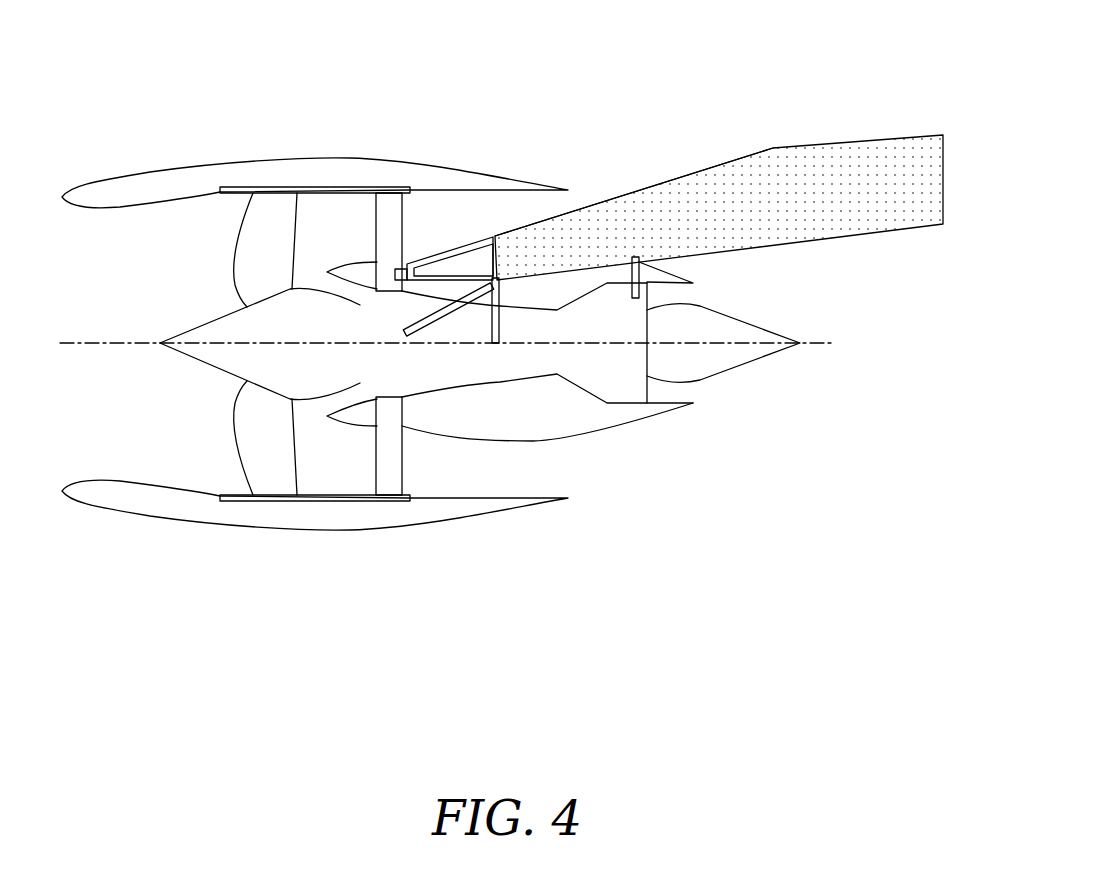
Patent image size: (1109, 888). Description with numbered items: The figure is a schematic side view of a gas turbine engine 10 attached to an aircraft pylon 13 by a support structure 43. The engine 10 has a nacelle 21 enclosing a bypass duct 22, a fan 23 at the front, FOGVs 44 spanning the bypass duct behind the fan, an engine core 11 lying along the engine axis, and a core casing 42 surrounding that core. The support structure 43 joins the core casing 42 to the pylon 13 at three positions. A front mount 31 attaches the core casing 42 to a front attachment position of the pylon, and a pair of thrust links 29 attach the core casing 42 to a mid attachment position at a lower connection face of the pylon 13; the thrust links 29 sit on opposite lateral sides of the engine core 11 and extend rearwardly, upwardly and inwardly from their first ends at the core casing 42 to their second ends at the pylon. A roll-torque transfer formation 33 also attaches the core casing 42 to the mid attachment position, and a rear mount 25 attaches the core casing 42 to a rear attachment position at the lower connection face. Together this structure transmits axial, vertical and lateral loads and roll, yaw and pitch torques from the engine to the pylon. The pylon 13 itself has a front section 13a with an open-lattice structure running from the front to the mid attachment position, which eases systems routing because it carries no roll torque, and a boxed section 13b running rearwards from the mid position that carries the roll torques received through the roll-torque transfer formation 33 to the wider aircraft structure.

The gas turbine engine 10 is at (118, 53).
The engine core 11 is at (378, 373).
The aircraft pylon 13 is at (644, 178).
The front section 13a is at (469, 224).
The boxed section 13b is at (589, 192).
The nacelle 21 is at (160, 180).
The bypass duct 22 is at (446, 235).
The fan 23 is at (250, 445).
The rear mount 25 is at (655, 278).
The thrust links 29 is at (448, 333).
The front mount 31 is at (381, 267).
The roll-torque transfer formation 33 is at (515, 322).
The core casing 42 is at (495, 345).
The support structure 43 is at (605, 360).
The FOGVs 44 is at (387, 200).